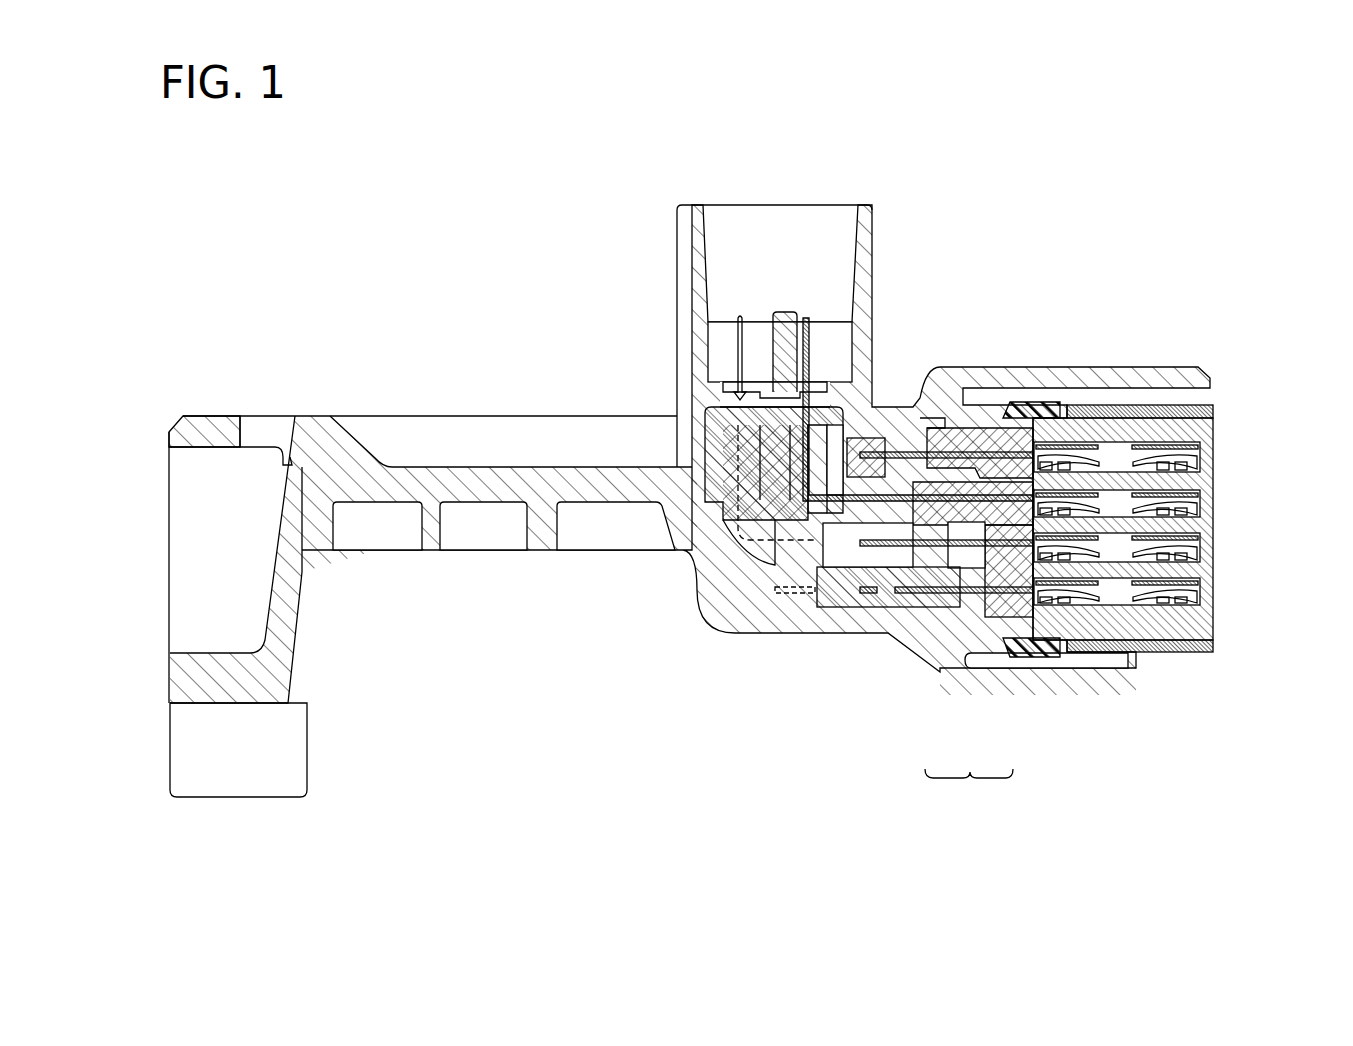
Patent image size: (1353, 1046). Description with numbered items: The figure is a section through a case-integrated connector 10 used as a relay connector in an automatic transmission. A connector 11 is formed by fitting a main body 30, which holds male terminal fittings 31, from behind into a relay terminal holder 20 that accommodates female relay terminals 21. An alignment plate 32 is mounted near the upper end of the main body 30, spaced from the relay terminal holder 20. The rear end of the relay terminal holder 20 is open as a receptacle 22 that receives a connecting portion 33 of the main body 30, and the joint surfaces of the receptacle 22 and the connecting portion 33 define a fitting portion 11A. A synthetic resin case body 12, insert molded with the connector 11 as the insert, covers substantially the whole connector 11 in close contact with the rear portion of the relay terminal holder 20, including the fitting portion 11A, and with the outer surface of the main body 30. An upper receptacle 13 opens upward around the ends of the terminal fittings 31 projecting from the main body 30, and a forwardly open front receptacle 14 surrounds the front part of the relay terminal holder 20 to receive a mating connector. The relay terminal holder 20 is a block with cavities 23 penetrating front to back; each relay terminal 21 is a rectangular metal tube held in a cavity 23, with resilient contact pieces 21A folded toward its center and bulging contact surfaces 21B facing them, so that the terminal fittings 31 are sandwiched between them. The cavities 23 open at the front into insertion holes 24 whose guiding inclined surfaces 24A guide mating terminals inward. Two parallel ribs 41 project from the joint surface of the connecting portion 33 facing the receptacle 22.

The case-integrated connector 10 is at (592, 212).
The connector 11 is at (969, 791).
The fitting portion 11A is at (945, 417).
The case body 12 is at (896, 398).
The upper receptacle 13 is at (870, 232).
The front receptacle 14 is at (1117, 690).
The relay terminal holder 20 is at (1057, 637).
The relay terminal 21 is at (1200, 525).
The resilient contact piece 21A is at (1205, 600).
The contact surface 21B is at (1180, 572).
The receptacle 22 is at (950, 428).
The cavity 23 is at (1122, 448).
The insertion hole 24 is at (1205, 455).
The guiding inclined surface 24A is at (1210, 462).
The main body 30 is at (872, 607).
The terminal fitting 31 is at (826, 498).
The alignment plate 32 is at (712, 416).
The connecting portion 33 is at (988, 435).
The rib 41 is at (1025, 402).